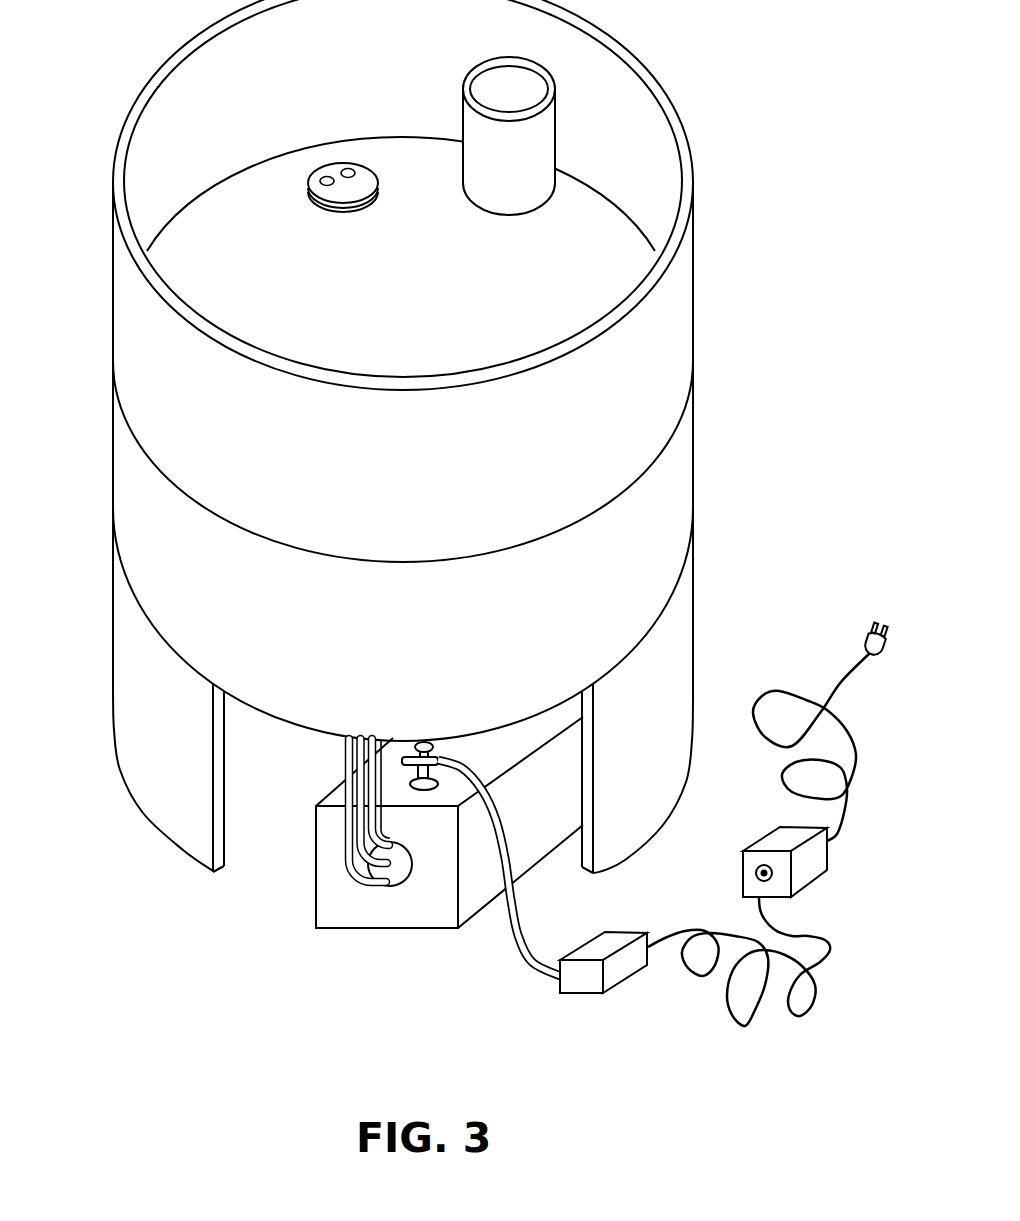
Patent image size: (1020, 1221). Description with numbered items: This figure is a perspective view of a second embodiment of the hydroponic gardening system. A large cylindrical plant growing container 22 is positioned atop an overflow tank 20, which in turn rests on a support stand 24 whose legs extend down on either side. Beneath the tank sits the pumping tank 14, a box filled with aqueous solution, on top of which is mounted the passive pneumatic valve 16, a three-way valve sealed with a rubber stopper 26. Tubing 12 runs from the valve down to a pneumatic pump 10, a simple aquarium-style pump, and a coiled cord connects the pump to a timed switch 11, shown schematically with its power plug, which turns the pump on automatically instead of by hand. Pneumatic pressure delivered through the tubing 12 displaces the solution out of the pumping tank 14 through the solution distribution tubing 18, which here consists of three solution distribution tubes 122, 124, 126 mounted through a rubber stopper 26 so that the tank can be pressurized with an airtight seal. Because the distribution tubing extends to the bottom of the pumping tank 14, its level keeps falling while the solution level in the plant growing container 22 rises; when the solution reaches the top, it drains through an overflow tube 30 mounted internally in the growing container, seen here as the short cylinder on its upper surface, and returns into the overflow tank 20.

The pneumatic pump 10 is at (617, 975).
The timed switch 11 is at (779, 837).
The tubing 12 is at (517, 950).
The pumping tank 14 is at (347, 917).
The passive pneumatic valve 16 is at (412, 745).
The solution distribution tubing 18 is at (306, 822).
The overflow tank 20 is at (677, 484).
The plant growing container 22 is at (130, 314).
The support stand 24 is at (128, 663).
The rubber stopper 26 is at (400, 873).
The overflow tube 30 is at (474, 122).
The solution distribution tube 122 is at (345, 820).
The solution distribution tube 124 is at (363, 778).
The solution distribution tube 126 is at (348, 743).